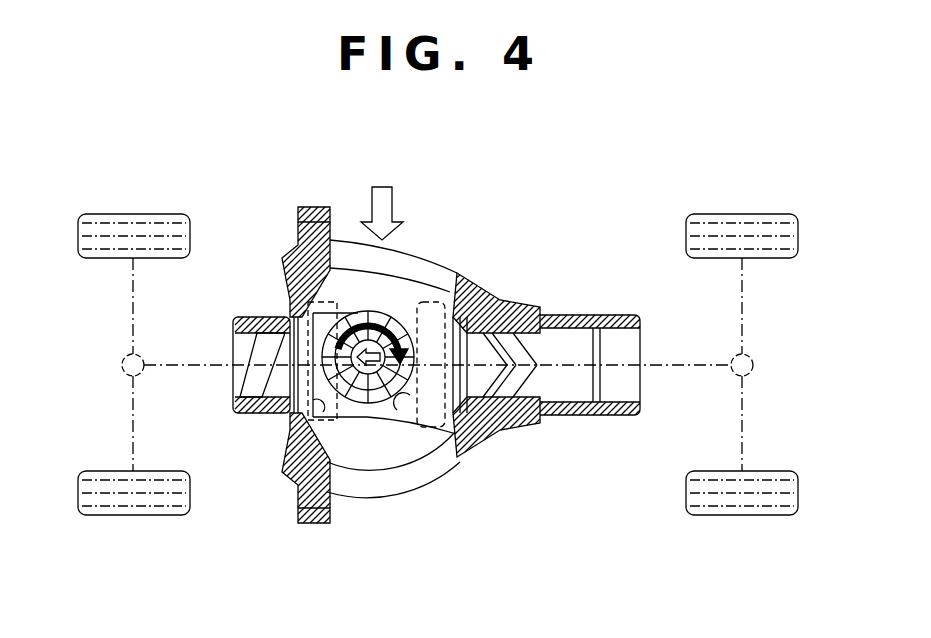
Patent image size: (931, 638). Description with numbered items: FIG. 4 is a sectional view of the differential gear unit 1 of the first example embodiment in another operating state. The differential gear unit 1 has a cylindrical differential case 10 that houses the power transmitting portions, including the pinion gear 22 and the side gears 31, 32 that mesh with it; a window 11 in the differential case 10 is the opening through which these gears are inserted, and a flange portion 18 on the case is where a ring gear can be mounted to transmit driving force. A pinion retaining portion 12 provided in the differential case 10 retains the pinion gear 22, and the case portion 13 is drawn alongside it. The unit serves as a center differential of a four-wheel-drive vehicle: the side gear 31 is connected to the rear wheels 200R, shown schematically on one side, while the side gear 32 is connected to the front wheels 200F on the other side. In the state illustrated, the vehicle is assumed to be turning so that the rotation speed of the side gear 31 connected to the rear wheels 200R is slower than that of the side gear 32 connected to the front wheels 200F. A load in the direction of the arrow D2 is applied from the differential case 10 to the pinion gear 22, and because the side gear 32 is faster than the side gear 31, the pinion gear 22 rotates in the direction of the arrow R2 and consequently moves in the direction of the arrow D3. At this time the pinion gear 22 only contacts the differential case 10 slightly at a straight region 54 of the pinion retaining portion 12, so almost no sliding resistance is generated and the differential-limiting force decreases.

The differential gear unit 1 is at (584, 168).
The differential case 10 is at (480, 297).
The window 11 is at (448, 266).
The pinion retaining portion 12 is at (358, 406).
The case portion 13 is at (420, 424).
The flange portion 18 is at (311, 207).
The pinion gear 22 is at (360, 309).
The side gear 31 is at (432, 300).
The side gear 32 is at (272, 418).
The straight region 54 is at (360, 306).
The front wheels 200F is at (134, 213).
The rear wheels 200R is at (743, 213).
The arrow D2 is at (384, 186).
The arrow D3 is at (396, 372).
The arrow R2 is at (333, 320).